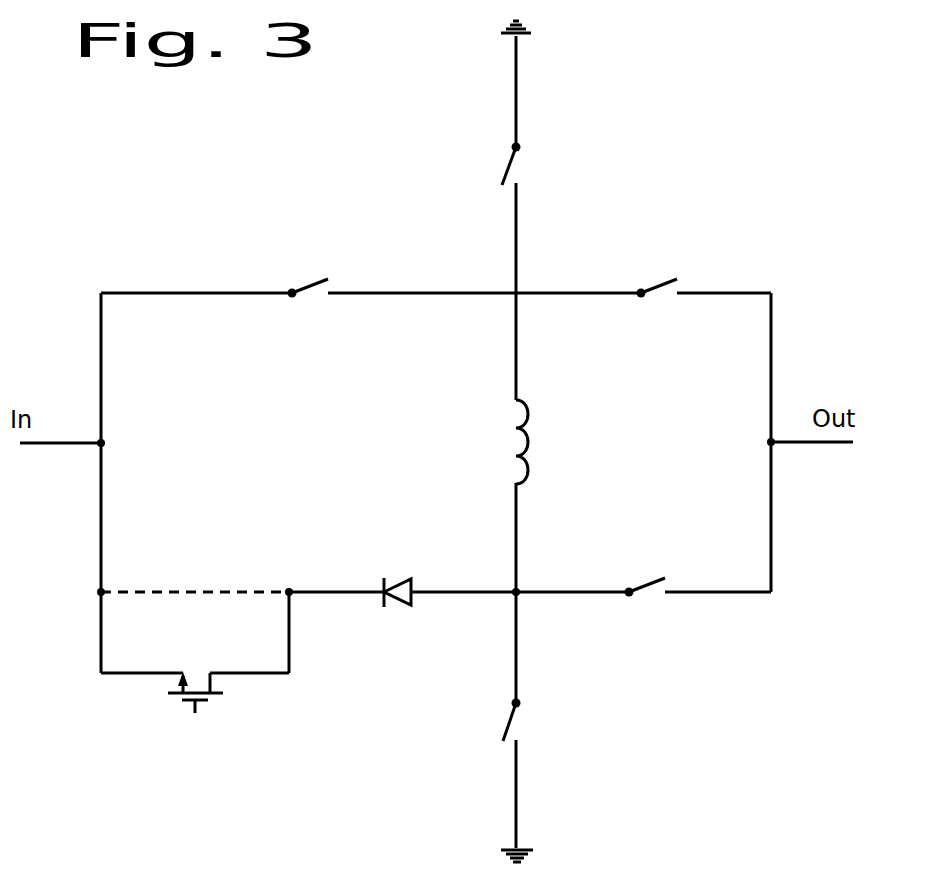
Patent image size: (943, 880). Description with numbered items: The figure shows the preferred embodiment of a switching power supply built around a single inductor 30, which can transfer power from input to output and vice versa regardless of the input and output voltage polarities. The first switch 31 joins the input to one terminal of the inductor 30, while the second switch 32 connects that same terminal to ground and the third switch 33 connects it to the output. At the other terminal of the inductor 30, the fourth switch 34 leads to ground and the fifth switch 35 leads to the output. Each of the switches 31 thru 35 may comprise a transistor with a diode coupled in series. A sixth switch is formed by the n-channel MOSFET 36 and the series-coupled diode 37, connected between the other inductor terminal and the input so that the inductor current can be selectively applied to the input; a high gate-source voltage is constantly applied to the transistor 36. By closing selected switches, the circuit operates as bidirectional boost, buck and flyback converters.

The inductor 30 is at (520, 442).
The first switch 31 is at (314, 286).
The second switch 32 is at (509, 172).
The third switch 33 is at (662, 286).
The fourth switch 34 is at (511, 728).
The fifth switch 35 is at (650, 586).
The n-channel MOSFET 36 is at (207, 700).
The diode 37 is at (413, 580).